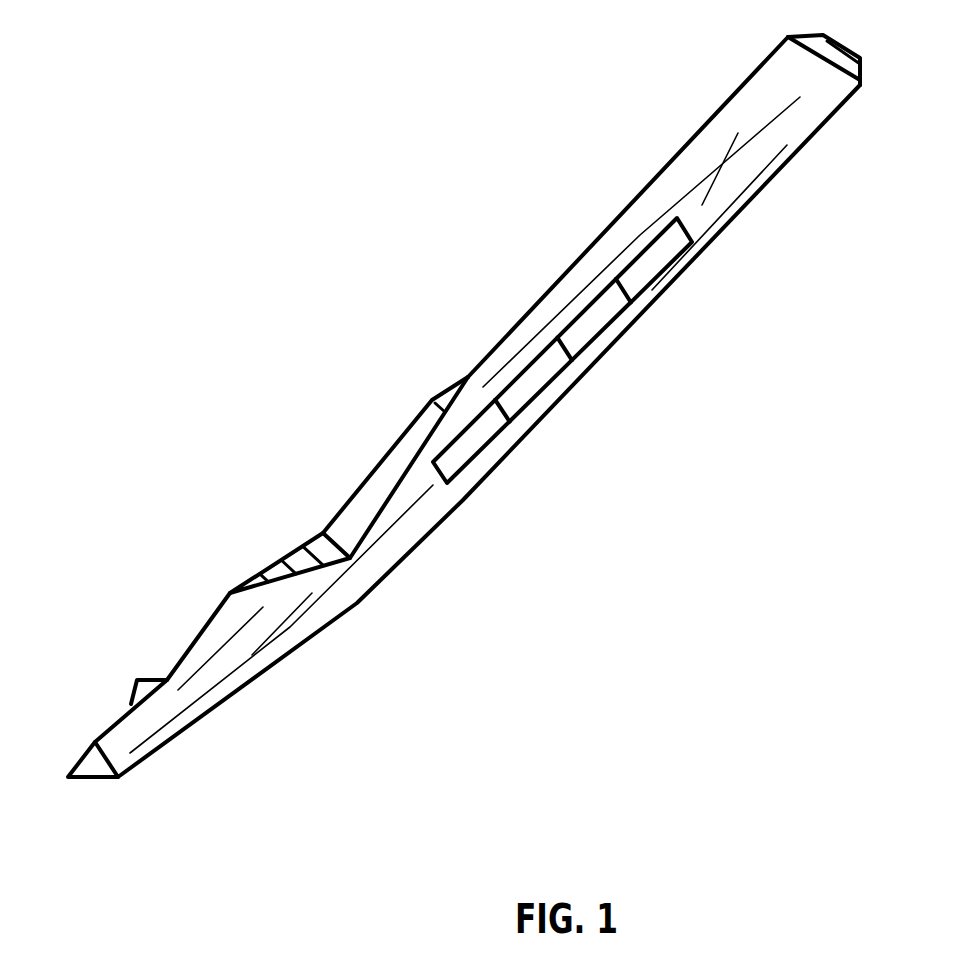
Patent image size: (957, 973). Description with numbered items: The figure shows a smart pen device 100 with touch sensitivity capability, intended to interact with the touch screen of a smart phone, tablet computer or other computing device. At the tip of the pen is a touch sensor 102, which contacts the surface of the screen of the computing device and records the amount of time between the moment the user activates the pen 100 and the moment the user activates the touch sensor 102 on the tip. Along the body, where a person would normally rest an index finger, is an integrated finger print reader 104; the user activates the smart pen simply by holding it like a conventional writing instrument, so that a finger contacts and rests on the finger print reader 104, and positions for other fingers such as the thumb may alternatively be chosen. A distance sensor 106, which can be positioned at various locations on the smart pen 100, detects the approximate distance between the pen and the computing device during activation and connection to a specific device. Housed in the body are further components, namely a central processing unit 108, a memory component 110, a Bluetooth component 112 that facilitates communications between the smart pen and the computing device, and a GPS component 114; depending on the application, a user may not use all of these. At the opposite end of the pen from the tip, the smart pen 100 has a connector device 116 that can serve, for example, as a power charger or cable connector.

The smart pen device 100 is at (388, 583).
The touch sensor 102 is at (98, 780).
The finger print reader 104 is at (308, 545).
The distance sensor 106 is at (140, 679).
The central processing unit (CPU) 108 is at (677, 243).
The memory component 110 is at (592, 315).
The Bluetooth component 112 is at (532, 388).
The GPS component 114 is at (483, 448).
The connector device 116 is at (788, 36).